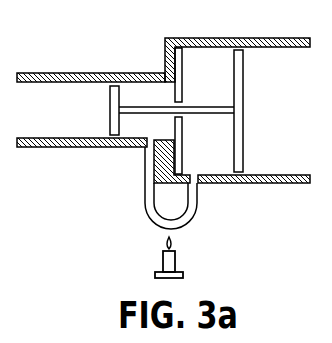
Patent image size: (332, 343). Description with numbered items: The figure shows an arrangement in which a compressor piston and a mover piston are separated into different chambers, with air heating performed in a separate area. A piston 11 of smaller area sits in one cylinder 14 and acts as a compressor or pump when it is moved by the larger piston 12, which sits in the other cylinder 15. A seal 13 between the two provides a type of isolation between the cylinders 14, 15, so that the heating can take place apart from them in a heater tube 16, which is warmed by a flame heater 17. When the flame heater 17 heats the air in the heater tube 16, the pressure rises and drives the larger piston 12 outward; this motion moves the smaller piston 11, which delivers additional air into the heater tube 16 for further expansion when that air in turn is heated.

The piston 11 is at (110, 112).
The larger piston 12 is at (243, 116).
The seal 13 is at (183, 68).
The cylinder 14 is at (85, 73).
The cylinder 15 is at (253, 38).
The heater tube 16 is at (198, 207).
The flame heater 17 is at (176, 257).